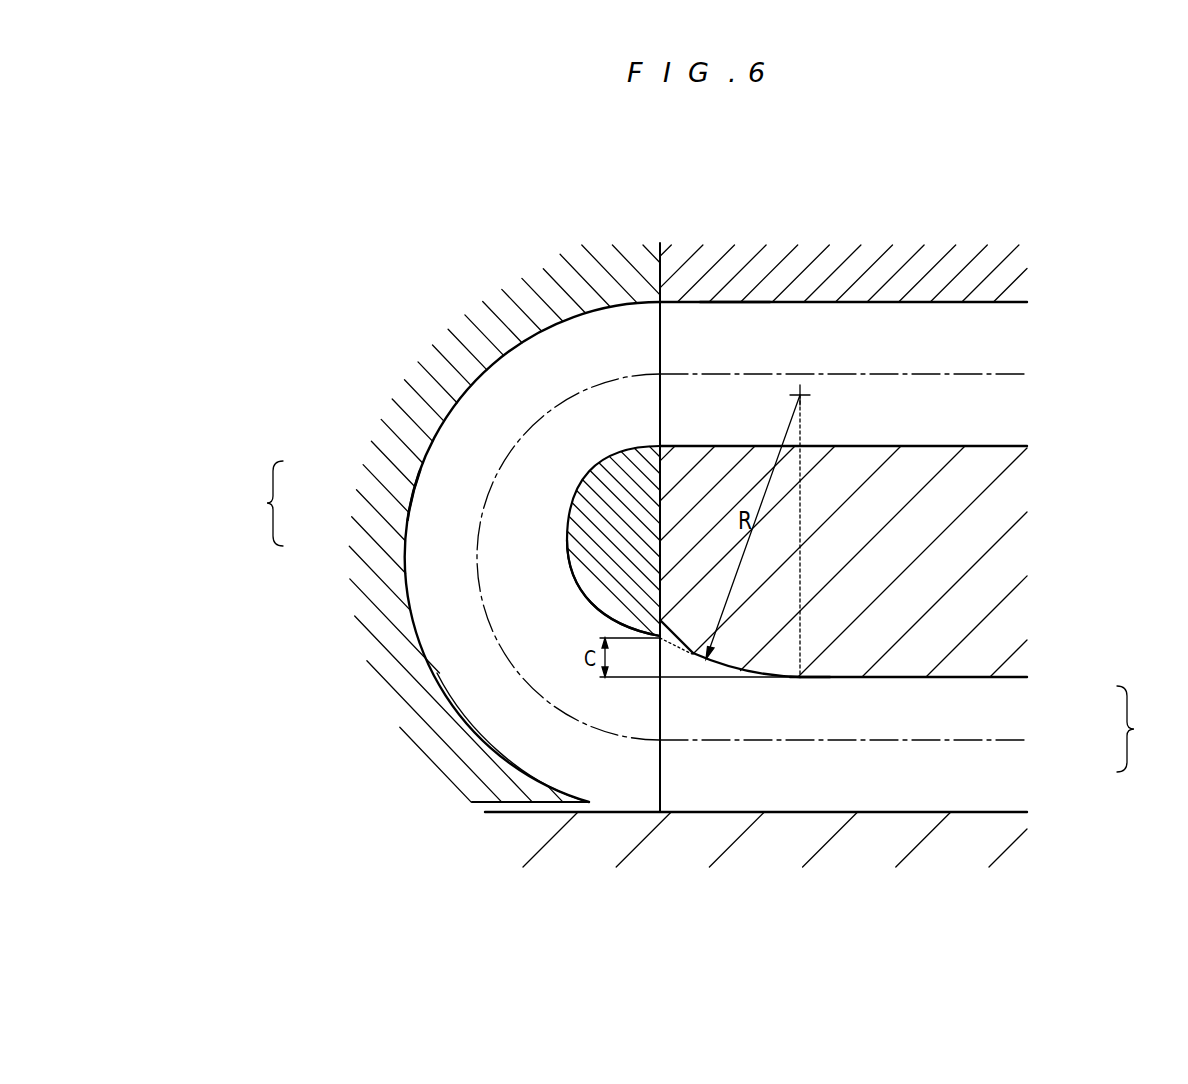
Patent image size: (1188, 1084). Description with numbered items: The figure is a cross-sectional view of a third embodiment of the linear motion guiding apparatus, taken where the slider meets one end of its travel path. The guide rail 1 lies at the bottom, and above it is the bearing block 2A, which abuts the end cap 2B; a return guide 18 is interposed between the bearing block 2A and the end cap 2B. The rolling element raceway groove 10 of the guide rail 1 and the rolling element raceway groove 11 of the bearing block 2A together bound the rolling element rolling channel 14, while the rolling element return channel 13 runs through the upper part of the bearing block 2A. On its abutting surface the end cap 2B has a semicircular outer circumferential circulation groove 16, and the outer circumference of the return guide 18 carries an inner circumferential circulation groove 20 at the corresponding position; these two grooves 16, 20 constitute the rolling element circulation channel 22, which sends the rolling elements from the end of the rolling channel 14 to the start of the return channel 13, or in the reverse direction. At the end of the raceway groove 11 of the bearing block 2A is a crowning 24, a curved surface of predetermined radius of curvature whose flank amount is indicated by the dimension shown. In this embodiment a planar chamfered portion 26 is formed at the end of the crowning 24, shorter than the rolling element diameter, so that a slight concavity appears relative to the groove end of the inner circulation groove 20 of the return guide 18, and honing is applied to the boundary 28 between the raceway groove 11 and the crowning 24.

The guide rail 1 is at (903, 832).
The bearing block 2A is at (850, 263).
The end cap 2B is at (569, 270).
The rolling element raceway groove 10 is at (1003, 812).
The rolling element raceway groove 11 is at (995, 677).
The rolling element return channel 13 is at (726, 294).
The rolling element rolling channel 14 is at (911, 629).
The outer circumferential circulation groove 16 is at (428, 462).
The return guide 18 is at (583, 596).
The inner circumferential circulation groove 20 is at (570, 521).
The rolling element circulation channel 22 is at (449, 541).
The crowning 24 is at (733, 668).
The chamfered portion 26 is at (678, 642).
The boundary 28 is at (800, 687).